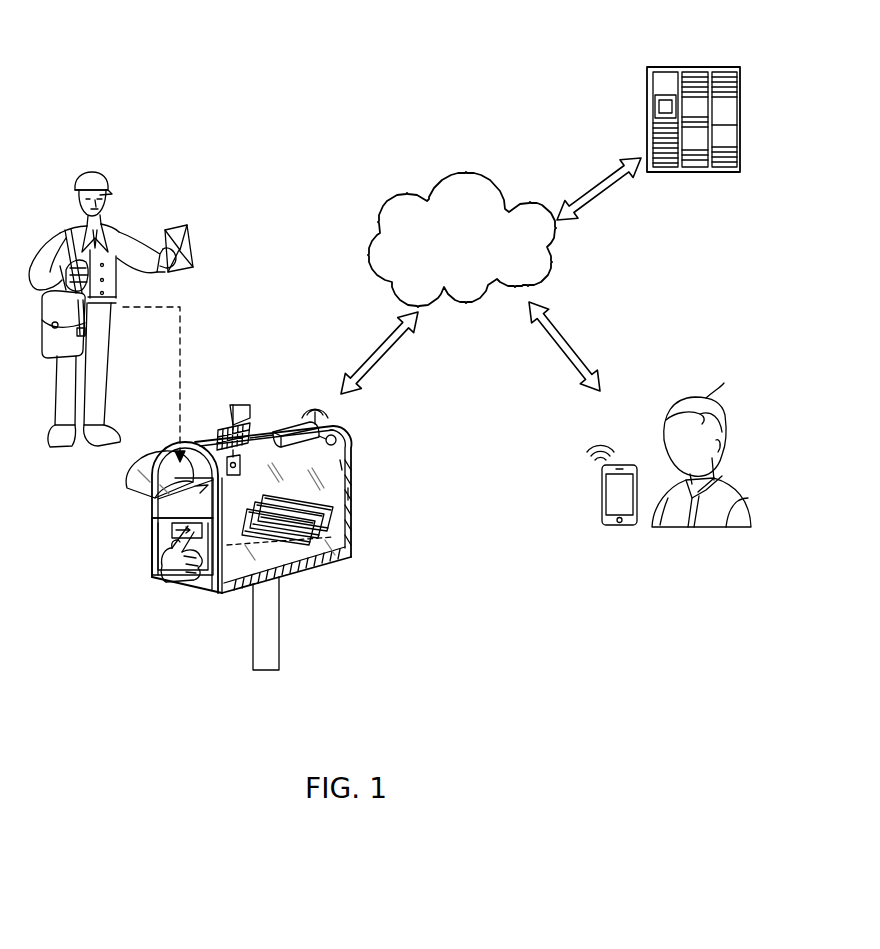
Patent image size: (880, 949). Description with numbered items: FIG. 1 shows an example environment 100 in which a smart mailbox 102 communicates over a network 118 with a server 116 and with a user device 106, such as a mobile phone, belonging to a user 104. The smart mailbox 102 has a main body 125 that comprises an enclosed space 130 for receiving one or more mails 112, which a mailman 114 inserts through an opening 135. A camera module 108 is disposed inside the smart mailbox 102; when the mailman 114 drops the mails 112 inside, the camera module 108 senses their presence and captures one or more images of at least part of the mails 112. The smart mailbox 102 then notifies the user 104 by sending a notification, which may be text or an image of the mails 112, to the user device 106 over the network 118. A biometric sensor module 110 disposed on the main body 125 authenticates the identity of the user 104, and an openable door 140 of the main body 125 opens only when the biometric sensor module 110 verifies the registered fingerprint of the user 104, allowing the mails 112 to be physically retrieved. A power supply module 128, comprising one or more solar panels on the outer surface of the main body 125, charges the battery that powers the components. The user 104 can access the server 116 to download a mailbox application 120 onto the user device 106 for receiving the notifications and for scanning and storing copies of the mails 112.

The environment 100 is at (724, 696).
The smart mailbox 102 is at (268, 529).
The user 104 is at (698, 398).
The user device 106 is at (618, 464).
The camera module 108 is at (292, 424).
The biometric sensor module 110 is at (172, 530).
The mails 112 is at (318, 545).
The mailman 114 is at (76, 224).
The server 116 is at (697, 67).
The network 118 is at (473, 268).
The mailbox application 120 is at (603, 490).
The main body 125 is at (372, 510).
The power supply module 128 is at (226, 431).
The enclosed space 130 is at (338, 477).
The opening 135 is at (160, 500).
The openable door 140 is at (206, 570).